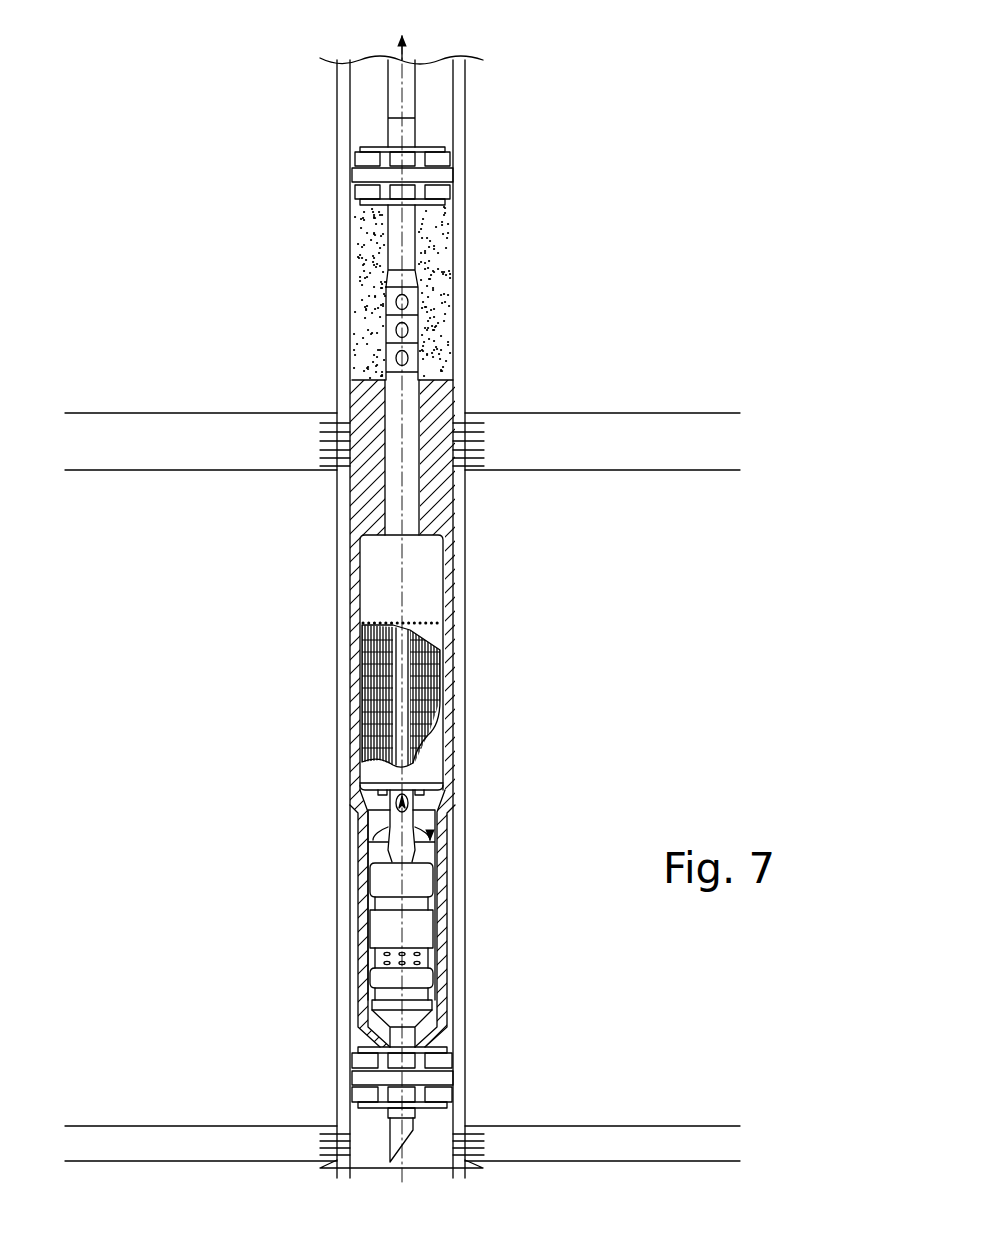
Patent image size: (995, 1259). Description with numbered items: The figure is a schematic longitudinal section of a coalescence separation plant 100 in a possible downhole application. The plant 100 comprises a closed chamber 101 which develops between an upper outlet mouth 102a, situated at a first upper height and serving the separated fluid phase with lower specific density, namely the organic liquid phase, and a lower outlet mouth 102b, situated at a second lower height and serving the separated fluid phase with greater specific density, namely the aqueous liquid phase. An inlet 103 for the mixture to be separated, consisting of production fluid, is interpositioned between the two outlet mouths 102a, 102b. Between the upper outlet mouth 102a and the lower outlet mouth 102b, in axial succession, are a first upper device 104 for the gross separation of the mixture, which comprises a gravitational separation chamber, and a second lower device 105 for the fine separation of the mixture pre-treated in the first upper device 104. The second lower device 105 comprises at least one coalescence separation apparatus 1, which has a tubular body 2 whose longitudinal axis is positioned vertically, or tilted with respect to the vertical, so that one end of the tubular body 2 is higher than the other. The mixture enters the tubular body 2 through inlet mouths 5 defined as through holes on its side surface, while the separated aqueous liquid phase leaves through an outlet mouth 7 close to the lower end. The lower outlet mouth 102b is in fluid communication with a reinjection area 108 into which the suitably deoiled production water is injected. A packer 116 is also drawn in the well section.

The plant 100 is at (190, 132).
The upper outlet mouth 102a is at (392, 112).
The lower outlet mouth 102b is at (392, 1138).
The closed chamber 101 is at (423, 272).
The first upper device for gross separation 104 is at (433, 313).
The packer 116 is at (410, 390).
The inlet 103 is at (322, 430).
The inlet mouth 5 is at (383, 622).
The second lower device for fine separation 105 is at (446, 631).
The coalescence separation apparatus 1 is at (352, 670).
The tubular body 2 is at (433, 765).
The outlet mouth of the aqueous liquid phase 7 is at (408, 800).
The reinjection area 108 is at (232, 1154).